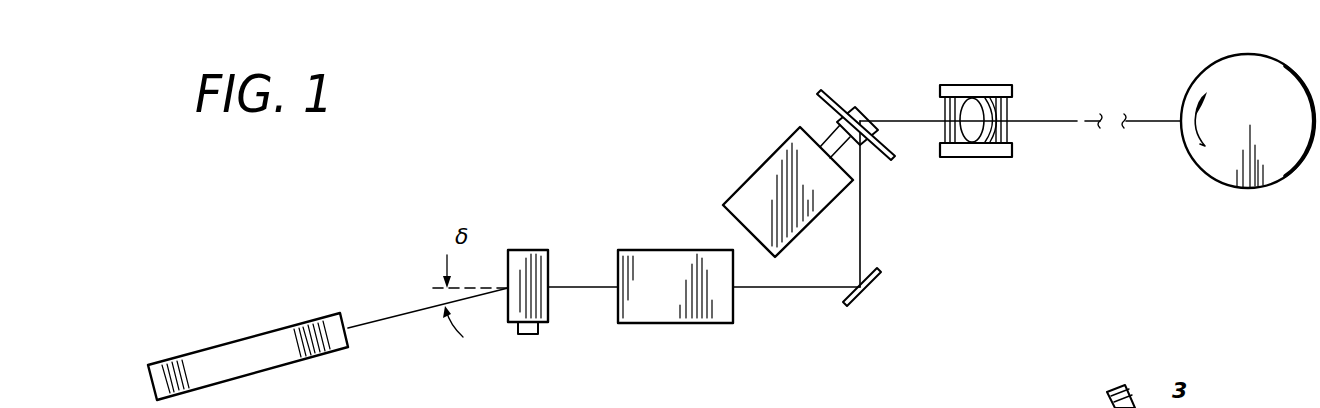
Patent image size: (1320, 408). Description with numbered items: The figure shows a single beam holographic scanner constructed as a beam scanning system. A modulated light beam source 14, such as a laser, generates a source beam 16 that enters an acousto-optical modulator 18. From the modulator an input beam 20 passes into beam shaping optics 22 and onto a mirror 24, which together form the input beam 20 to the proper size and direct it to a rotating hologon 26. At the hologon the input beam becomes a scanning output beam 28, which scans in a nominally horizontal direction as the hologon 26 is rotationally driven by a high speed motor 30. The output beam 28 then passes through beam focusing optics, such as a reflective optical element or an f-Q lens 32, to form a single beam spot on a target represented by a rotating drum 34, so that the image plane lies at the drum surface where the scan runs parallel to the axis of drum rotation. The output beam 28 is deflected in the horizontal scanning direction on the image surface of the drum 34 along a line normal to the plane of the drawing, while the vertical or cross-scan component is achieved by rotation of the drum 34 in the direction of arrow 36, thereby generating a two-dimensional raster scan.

The modulated light beam source 14 is at (248, 338).
The source beam 16 is at (386, 318).
The acousto-optical modulator 18 is at (530, 250).
The input beam 20 is at (580, 285).
The beam shaping optics 22 is at (665, 250).
The mirror 24 is at (880, 290).
The rotating hologon 26 is at (836, 96).
The scanning output beam 28 is at (906, 120).
The high speed motor 30 is at (765, 163).
The f-Q lens 32 is at (962, 85).
The rotating drum 34 is at (1195, 80).
The arrow 36 is at (1190, 142).